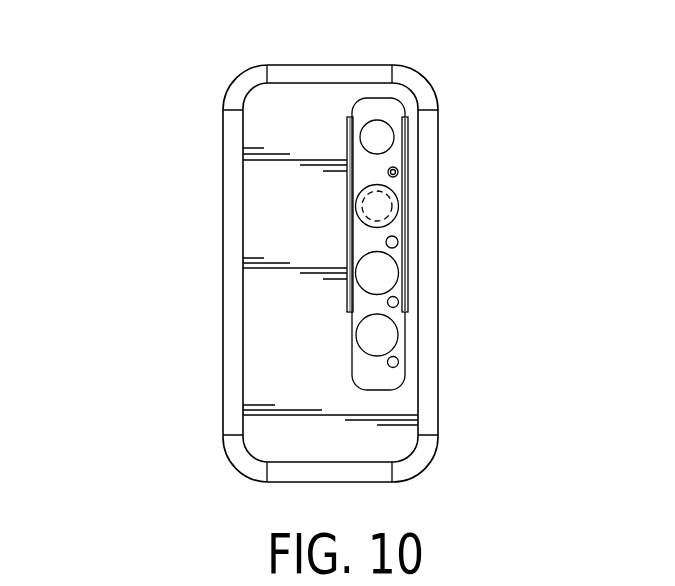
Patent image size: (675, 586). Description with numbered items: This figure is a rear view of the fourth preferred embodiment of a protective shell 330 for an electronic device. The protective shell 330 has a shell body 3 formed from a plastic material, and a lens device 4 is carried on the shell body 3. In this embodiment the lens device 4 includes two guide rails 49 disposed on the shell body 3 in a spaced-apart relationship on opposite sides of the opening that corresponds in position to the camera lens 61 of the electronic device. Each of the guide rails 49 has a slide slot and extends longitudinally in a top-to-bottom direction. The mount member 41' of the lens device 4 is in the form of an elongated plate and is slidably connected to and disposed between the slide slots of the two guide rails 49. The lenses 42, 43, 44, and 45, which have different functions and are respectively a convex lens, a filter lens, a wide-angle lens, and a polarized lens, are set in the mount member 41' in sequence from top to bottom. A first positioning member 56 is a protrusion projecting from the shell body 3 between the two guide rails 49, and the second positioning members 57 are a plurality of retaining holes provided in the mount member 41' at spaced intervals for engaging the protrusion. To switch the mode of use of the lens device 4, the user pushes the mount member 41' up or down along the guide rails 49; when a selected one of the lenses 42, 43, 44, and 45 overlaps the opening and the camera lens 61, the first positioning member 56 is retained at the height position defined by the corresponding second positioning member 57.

The protective shell 330 is at (203, 95).
The shell body 3 is at (258, 221).
The lens device 4 is at (402, 95).
The mount member 41' is at (372, 203).
The guide rails 49 is at (347, 117).
The lens 42 is at (388, 135).
The first positioning member 56 is at (397, 171).
The second positioning members 57 is at (398, 175).
The camera lens 61 is at (378, 206).
The lens 43 is at (393, 217).
The lens 44 is at (390, 279).
The lens 45 is at (390, 337).